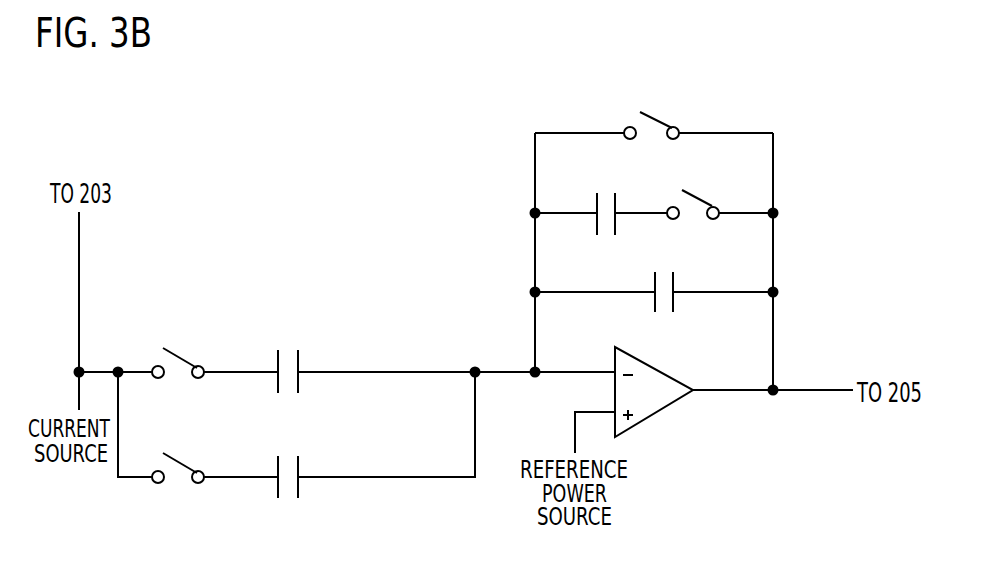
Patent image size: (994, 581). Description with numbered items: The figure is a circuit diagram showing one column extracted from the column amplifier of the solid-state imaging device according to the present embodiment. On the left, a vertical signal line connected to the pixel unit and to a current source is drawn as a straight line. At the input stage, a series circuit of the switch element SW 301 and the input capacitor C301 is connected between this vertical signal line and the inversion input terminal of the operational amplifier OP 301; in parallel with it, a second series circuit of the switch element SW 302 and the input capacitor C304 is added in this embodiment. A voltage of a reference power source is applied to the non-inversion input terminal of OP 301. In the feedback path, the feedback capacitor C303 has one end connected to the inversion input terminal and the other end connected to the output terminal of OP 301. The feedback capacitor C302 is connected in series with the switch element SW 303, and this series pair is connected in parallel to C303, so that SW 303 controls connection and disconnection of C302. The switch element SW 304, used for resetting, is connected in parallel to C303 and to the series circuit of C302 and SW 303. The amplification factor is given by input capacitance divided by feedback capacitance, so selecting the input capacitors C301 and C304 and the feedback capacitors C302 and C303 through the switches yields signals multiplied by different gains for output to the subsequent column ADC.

The switch element SW301 is at (202, 330).
The switch element SW302 is at (202, 437).
The switch element SW303 is at (718, 178).
The switch element for resetting SW304 is at (663, 118).
The input capacitor C301 is at (298, 367).
The feedback capacitor C302 is at (637, 175).
The feedback capacitor C303 is at (695, 267).
The input capacitor C304 is at (298, 472).
The operational amplifier OP301 is at (652, 418).